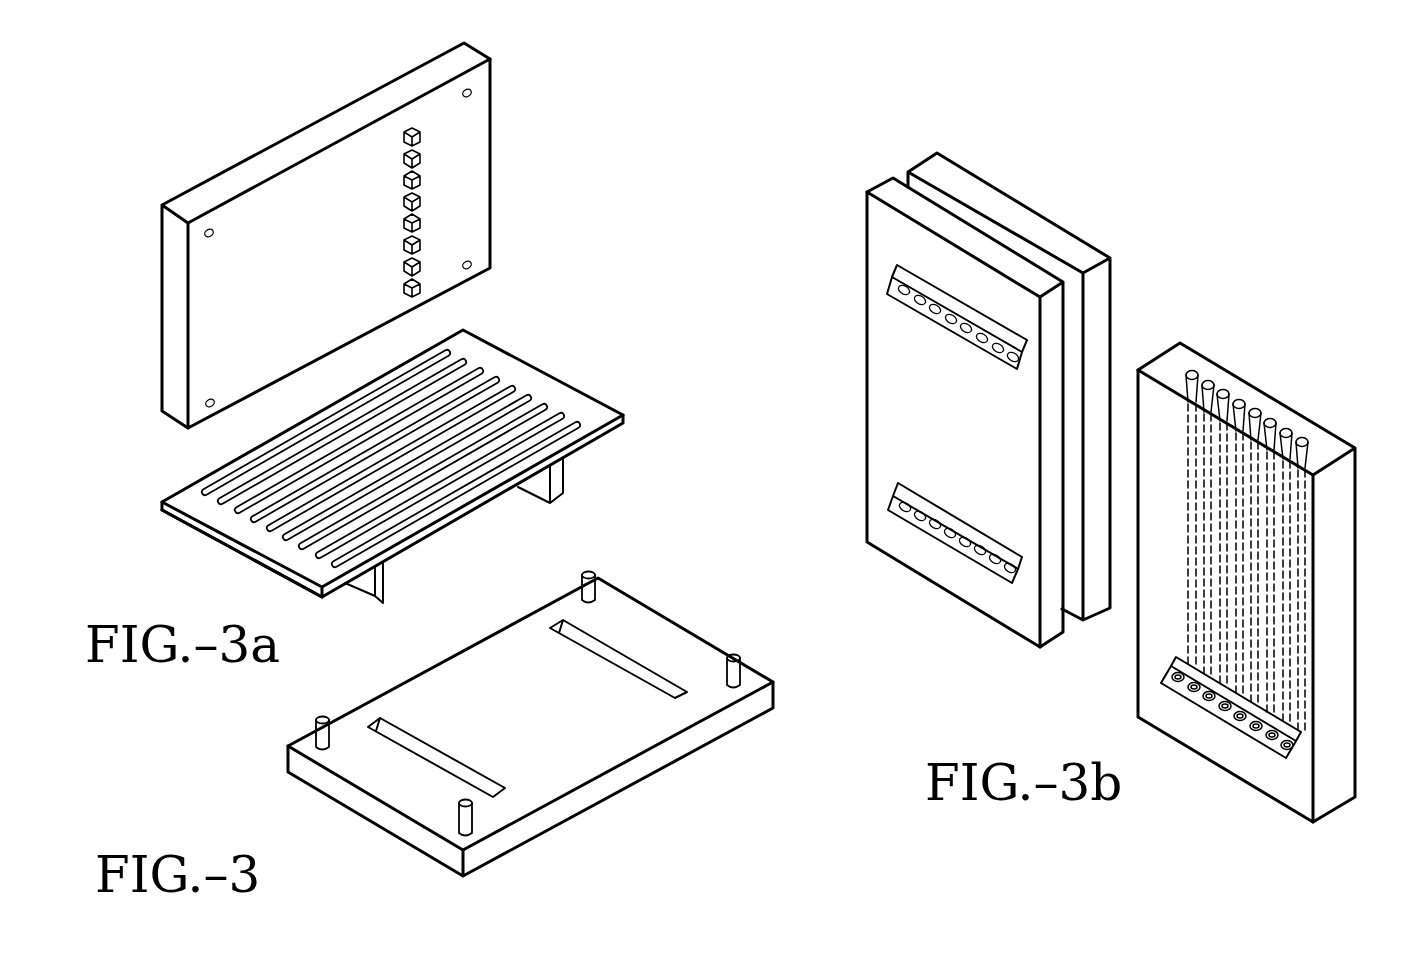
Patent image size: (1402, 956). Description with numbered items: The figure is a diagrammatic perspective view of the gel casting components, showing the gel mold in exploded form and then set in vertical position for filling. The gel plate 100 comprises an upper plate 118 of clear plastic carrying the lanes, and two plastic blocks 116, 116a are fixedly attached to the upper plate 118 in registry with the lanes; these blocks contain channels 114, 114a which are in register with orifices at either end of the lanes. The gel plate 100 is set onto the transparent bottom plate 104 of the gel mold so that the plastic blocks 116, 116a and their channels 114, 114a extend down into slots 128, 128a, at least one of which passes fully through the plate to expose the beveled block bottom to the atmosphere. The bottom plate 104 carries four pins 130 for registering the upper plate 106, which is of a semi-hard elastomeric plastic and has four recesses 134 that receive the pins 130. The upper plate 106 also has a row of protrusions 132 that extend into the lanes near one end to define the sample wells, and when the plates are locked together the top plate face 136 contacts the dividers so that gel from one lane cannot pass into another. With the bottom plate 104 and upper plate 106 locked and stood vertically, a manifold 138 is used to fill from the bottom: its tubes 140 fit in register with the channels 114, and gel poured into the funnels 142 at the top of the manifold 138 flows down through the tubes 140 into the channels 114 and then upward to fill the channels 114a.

In FIG. 3A, the gel plate 100 is at (480, 355).
In FIG. 3, the bottom plate 104 is at (613, 607).
In FIG. 3B, the bottom plate 104 is at (984, 459).
In FIG. 3, the upper plate 106 is at (445, 132).
In FIG. 3B, the upper plate 106 is at (988, 198).
In FIG. 3B, the channel 114 is at (898, 508).
In FIG. 3B, the channel 114a is at (897, 277).
In FIG. 3A, the plastic block 116 is at (377, 578).
In FIG. 3A, the plastic block 116a is at (542, 487).
In FIG. 3A, the upper plate 118 is at (265, 558).
In FIG. 3, the slot 128 is at (407, 738).
In FIG. 3, the slot 128a is at (590, 640).
In FIG. 3, the pin 130 is at (730, 658).
In FIG. 3, the protrusion 132 is at (403, 138).
In FIG. 3, the recess 134 is at (213, 234).
In FIG. 3, the top plate face 136 is at (334, 282).
In FIG. 3B, the manifold 138 is at (1267, 407).
In FIG. 3B, the tube 140 is at (1173, 666).
In FIG. 3B, the funnel 142 is at (1193, 370).